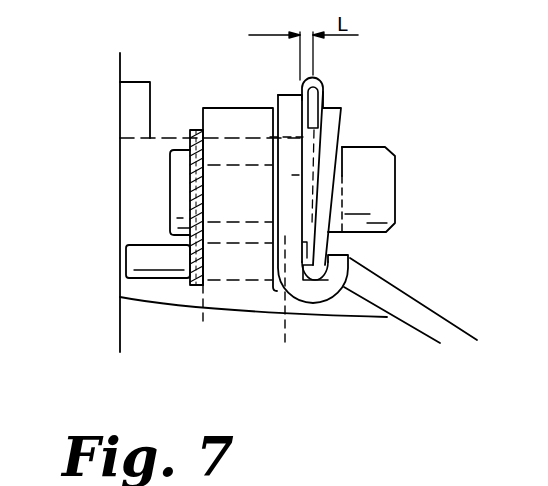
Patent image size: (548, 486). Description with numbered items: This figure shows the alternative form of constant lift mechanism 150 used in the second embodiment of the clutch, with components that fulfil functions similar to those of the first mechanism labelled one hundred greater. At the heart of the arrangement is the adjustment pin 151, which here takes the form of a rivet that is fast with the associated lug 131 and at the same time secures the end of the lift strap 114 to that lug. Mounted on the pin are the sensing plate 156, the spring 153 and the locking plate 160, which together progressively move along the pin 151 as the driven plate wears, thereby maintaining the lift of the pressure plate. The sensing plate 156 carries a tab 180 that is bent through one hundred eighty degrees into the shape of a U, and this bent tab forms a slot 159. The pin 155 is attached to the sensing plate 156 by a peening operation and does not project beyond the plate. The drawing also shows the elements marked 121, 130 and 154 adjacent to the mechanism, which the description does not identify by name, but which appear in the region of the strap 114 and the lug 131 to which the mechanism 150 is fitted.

The lift strap 114 is at (195, 130).
The strap 121 is at (407, 312).
The cable harness 130 is at (240, 323).
The lug 131 is at (238, 118).
The constant lift mechanism 150 is at (400, 138).
The adjustment pin 151 is at (380, 207).
The spring 153 is at (322, 92).
The washer 154 is at (178, 282).
The pin 155 is at (150, 268).
The sensing plate 156 is at (290, 168).
The slot 159 is at (307, 300).
The locking plate 160 is at (333, 117).
The tab 180 is at (340, 312).